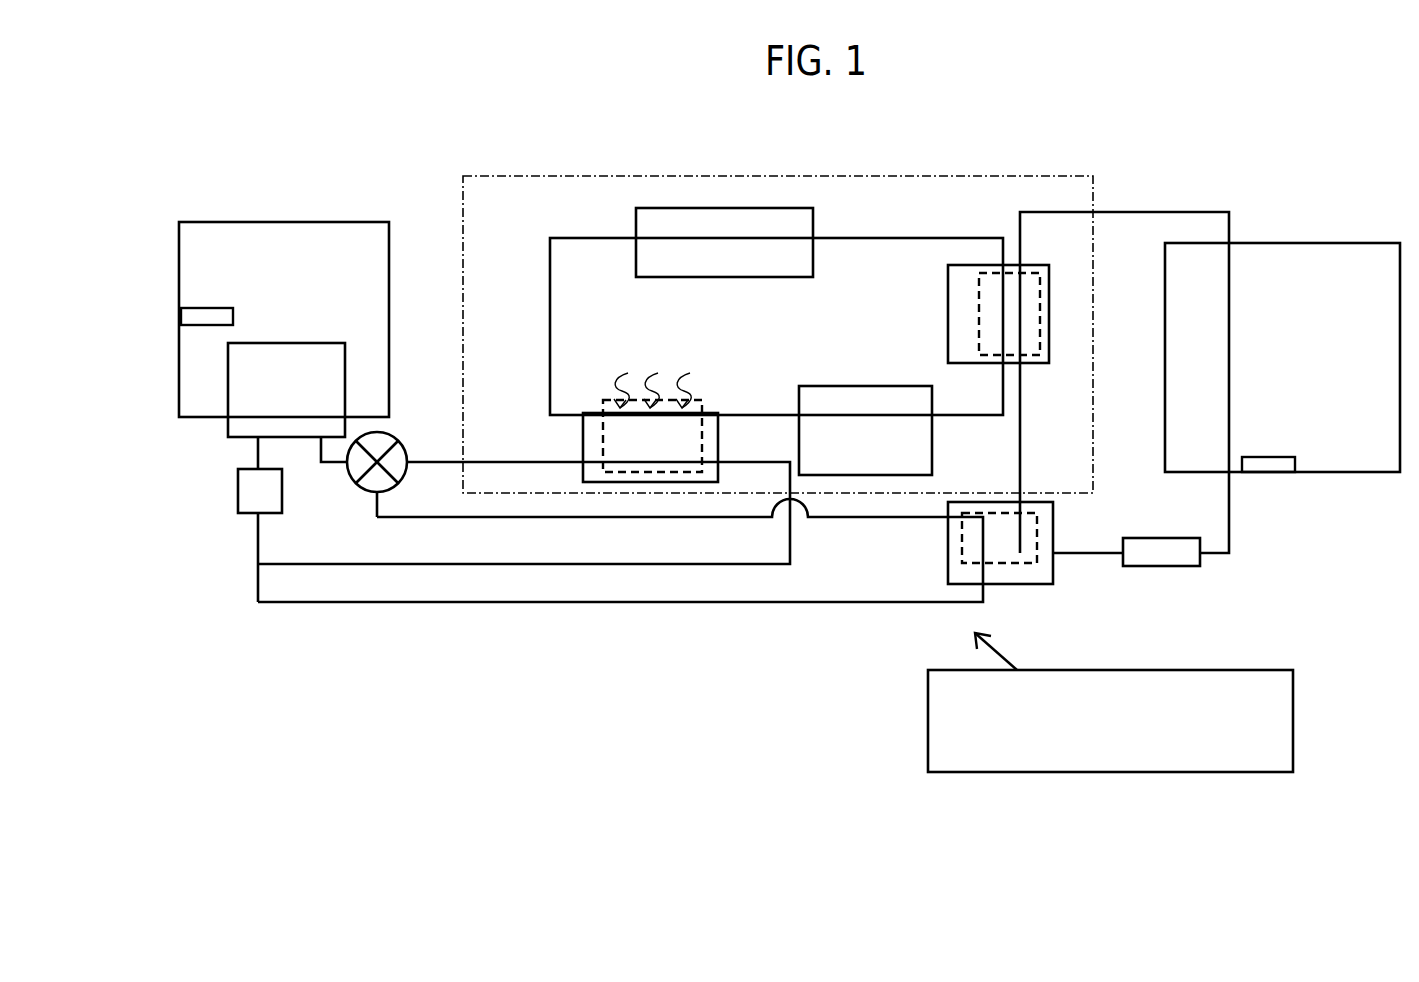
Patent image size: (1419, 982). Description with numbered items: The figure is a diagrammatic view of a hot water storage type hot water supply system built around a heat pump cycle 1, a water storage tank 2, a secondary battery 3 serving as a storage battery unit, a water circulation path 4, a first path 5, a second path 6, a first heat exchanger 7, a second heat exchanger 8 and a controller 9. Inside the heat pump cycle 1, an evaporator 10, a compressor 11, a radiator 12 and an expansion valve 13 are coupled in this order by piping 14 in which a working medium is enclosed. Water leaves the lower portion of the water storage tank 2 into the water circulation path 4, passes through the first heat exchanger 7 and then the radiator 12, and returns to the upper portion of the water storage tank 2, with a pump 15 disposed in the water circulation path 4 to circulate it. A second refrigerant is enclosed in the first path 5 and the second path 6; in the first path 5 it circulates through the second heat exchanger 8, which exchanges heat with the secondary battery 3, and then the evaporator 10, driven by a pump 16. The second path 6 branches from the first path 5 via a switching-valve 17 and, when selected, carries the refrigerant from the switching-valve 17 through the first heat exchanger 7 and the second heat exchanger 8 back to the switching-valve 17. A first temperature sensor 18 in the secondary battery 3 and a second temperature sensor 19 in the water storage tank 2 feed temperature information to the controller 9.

The heat pump cycle 1 is at (883, 176).
The water storage tank 2 is at (1327, 243).
The secondary battery 3 is at (357, 222).
The water circulation path 4 is at (1159, 212).
The first path 5 is at (360, 564).
The second path 6 is at (652, 602).
The first heat exchanger 7 is at (1017, 584).
The second heat exchanger 8 is at (228, 437).
The controller 9 is at (928, 717).
The evaporator 10 is at (718, 445).
The compressor 11 is at (685, 278).
The radiator 12 is at (948, 300).
The expansion valve 13 is at (890, 386).
The piping 14 is at (908, 238).
The pump 15 is at (1159, 566).
The pump 16 is at (238, 505).
The switching-valve 17 is at (352, 480).
The first temperature sensor 18 is at (181, 325).
The second temperature sensor 19 is at (1273, 472).